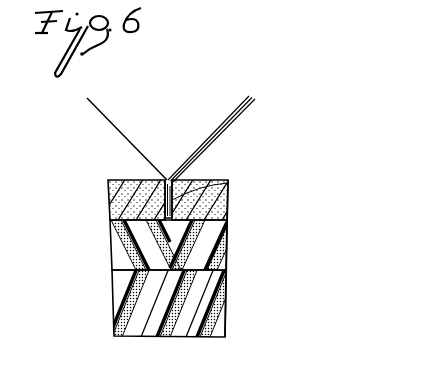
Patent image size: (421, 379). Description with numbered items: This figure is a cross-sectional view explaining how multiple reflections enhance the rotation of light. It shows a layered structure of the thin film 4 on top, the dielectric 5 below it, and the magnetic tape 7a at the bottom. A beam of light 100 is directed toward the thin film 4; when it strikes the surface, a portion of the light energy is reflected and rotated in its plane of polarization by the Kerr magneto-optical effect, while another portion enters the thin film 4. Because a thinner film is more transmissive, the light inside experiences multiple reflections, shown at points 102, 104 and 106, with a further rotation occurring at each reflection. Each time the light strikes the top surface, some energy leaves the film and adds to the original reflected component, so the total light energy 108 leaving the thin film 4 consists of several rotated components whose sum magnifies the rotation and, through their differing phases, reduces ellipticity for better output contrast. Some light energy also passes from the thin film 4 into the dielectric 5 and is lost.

The beam of light 100 is at (143, 157).
The total light energy 108 is at (213, 143).
The thin film 4 is at (120, 190).
The reflection point 106 is at (185, 185).
The reflection point 104 is at (172, 217).
The dielectric 5 is at (113, 250).
The magnetic tape 7a is at (130, 283).
The reflection point 102 is at (222, 267).